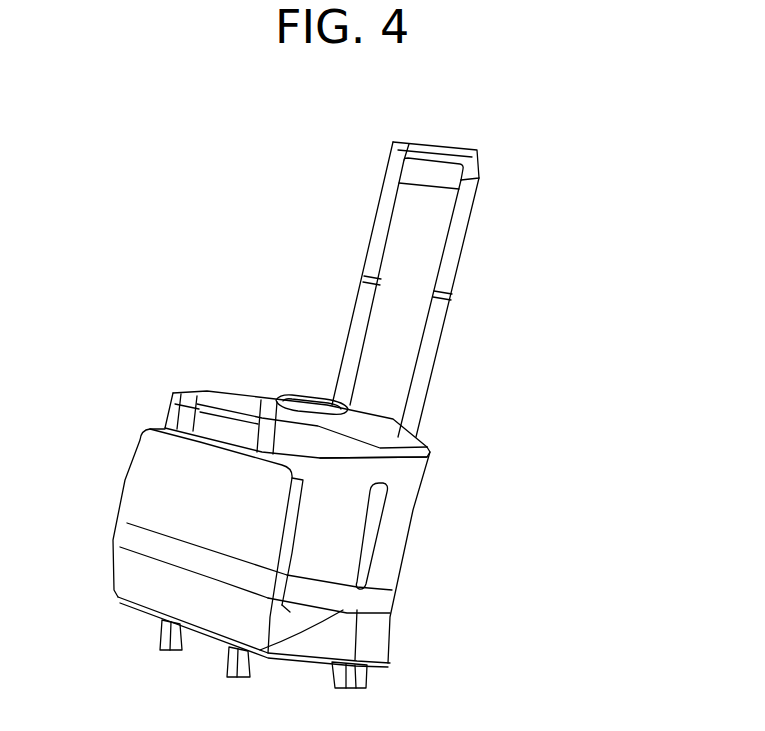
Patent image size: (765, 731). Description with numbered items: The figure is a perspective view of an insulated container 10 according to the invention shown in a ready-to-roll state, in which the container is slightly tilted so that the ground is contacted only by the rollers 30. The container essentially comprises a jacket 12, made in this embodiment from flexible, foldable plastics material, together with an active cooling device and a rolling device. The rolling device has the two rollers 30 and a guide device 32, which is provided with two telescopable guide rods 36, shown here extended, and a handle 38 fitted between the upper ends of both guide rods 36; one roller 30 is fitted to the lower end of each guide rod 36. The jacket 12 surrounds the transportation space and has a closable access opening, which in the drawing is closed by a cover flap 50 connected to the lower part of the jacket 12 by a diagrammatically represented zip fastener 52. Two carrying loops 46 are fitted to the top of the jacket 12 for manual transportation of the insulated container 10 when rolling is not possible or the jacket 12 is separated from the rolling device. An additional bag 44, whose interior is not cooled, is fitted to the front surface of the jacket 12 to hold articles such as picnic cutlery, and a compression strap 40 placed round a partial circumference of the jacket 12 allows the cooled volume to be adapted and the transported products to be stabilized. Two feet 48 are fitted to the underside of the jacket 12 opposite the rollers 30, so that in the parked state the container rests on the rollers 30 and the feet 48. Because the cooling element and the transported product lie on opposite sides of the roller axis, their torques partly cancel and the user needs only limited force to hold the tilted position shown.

The insulated container 10 is at (198, 293).
The jacket 12 is at (400, 497).
The rollers 30 is at (360, 678).
The guide device 32 is at (515, 183).
The guide rods 36 is at (445, 262).
The handle 38 is at (432, 148).
The compression strap 40 is at (370, 605).
The additional bag 44 is at (183, 492).
The carrying loops 46 is at (290, 405).
The feet 48 is at (230, 665).
The cover flap 50 is at (407, 438).
The zip fastener 52 is at (400, 457).